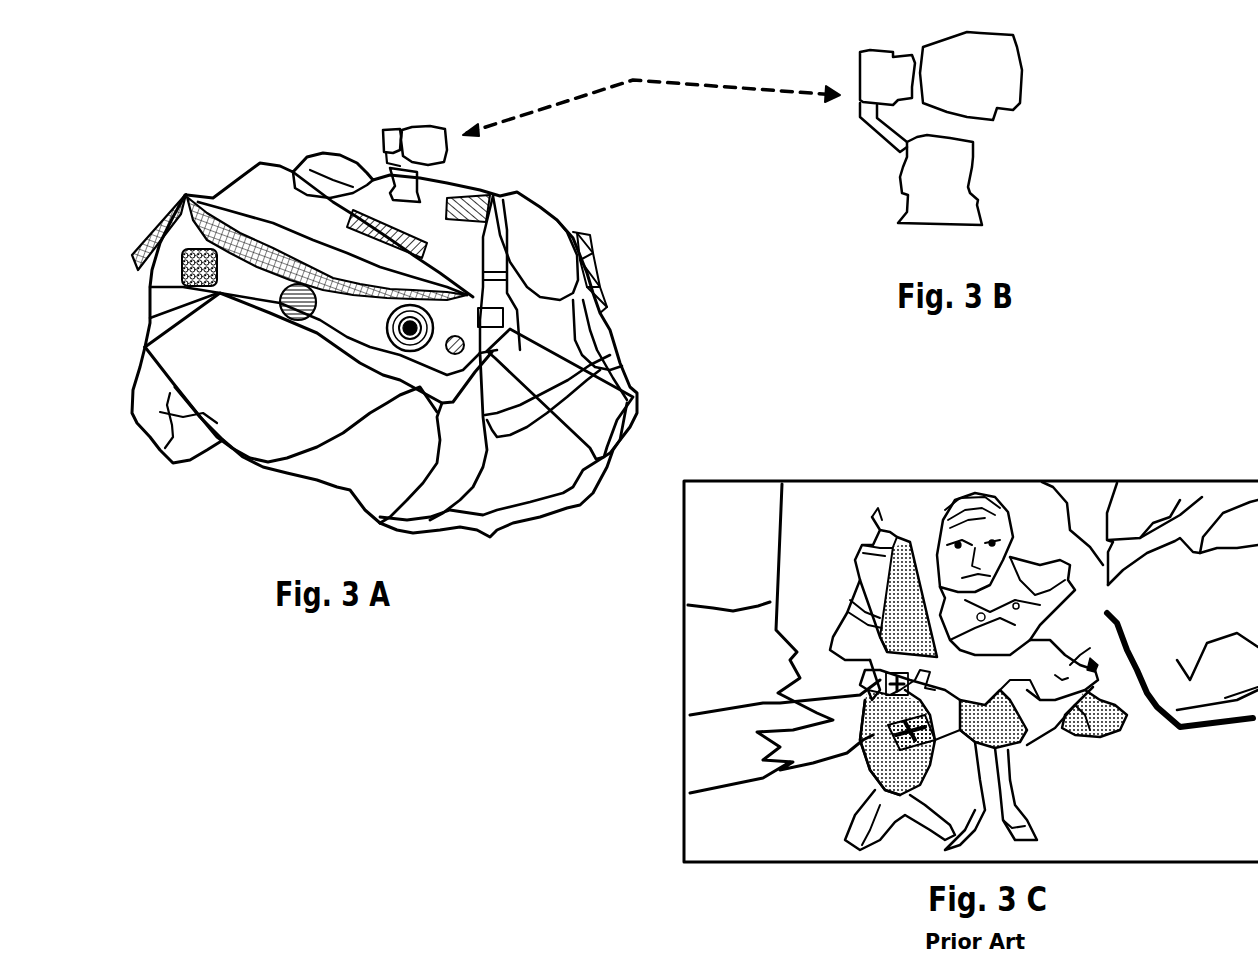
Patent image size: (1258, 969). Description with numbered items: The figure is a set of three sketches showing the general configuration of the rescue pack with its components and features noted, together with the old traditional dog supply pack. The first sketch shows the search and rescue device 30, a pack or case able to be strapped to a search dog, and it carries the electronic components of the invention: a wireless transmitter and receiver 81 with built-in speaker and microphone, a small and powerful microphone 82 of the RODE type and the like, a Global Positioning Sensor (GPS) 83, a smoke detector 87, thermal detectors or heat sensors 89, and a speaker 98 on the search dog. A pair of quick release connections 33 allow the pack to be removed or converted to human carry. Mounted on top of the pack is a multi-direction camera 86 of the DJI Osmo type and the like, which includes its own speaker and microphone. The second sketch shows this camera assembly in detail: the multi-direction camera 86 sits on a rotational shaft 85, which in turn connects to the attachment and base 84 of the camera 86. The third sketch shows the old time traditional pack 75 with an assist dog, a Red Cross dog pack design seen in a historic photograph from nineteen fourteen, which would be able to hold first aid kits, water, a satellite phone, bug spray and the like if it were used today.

In FIG. 3A, the search and rescue device pack 30 is at (653, 228).
In FIG. 3A, the quick release connection 33 is at (499, 351).
In FIG. 3C, the old time traditional pack 75 is at (897, 792).
In FIG. 3A, the wireless transmitter and receiver 81 is at (175, 245).
In FIG. 3A, the microphone 82 is at (350, 212).
In FIG. 3A, the Global Positioning Sensor (GPS) 83 is at (280, 302).
In FIG. 3B, the attachment and base 84 is at (980, 212).
In FIG. 3B, the rotational shaft 85 is at (877, 118).
In FIG. 3A, the multi-direction camera 86 is at (432, 130).
In FIG. 3B, the multi-direction camera 86 is at (1020, 73).
In FIG. 3A, the smoke detector 87 is at (395, 346).
In FIG. 3A, the thermal detectors 89 is at (446, 356).
In FIG. 3A, the speaker 98 is at (492, 192).